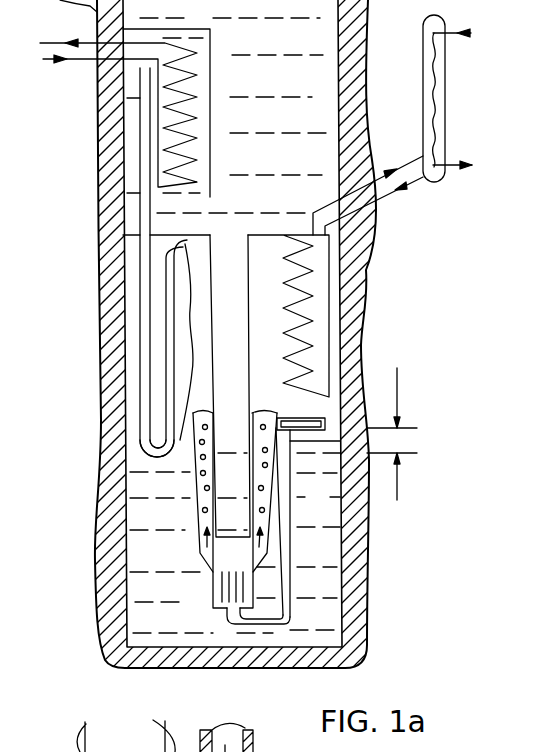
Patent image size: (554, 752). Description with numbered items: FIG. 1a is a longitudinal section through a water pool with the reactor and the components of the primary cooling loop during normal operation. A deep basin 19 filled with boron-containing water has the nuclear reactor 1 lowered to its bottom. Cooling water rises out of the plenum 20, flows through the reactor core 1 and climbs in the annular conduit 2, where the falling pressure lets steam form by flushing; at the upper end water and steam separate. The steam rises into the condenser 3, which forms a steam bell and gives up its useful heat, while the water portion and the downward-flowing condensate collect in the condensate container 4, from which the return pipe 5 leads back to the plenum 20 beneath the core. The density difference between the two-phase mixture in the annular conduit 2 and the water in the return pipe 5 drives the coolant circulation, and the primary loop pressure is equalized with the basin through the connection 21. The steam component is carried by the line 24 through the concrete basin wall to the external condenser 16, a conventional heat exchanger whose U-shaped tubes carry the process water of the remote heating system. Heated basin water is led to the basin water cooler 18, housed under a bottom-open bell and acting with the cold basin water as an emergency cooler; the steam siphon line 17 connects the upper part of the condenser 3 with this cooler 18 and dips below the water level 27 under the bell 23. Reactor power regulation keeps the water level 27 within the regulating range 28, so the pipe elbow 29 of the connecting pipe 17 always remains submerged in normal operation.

The nuclear reactor 1 is at (277, 375).
The annular conduit 2 is at (264, 515).
The condenser 3 is at (263, 278).
The condensate container 4 is at (300, 418).
The return pipe 5 is at (290, 590).
The condenser 16 is at (424, 80).
The steam siphon line 17 is at (145, 200).
The basin water cooler 18 is at (197, 104).
The basin 19 is at (327, 623).
The plenum 20 is at (247, 612).
The connection 21 is at (386, 417).
The bell 23 is at (150, 446).
The line 24 is at (380, 197).
The water level 27 is at (307, 444).
The regulating range 28 is at (407, 442).
The pipe elbow 29 is at (153, 462).